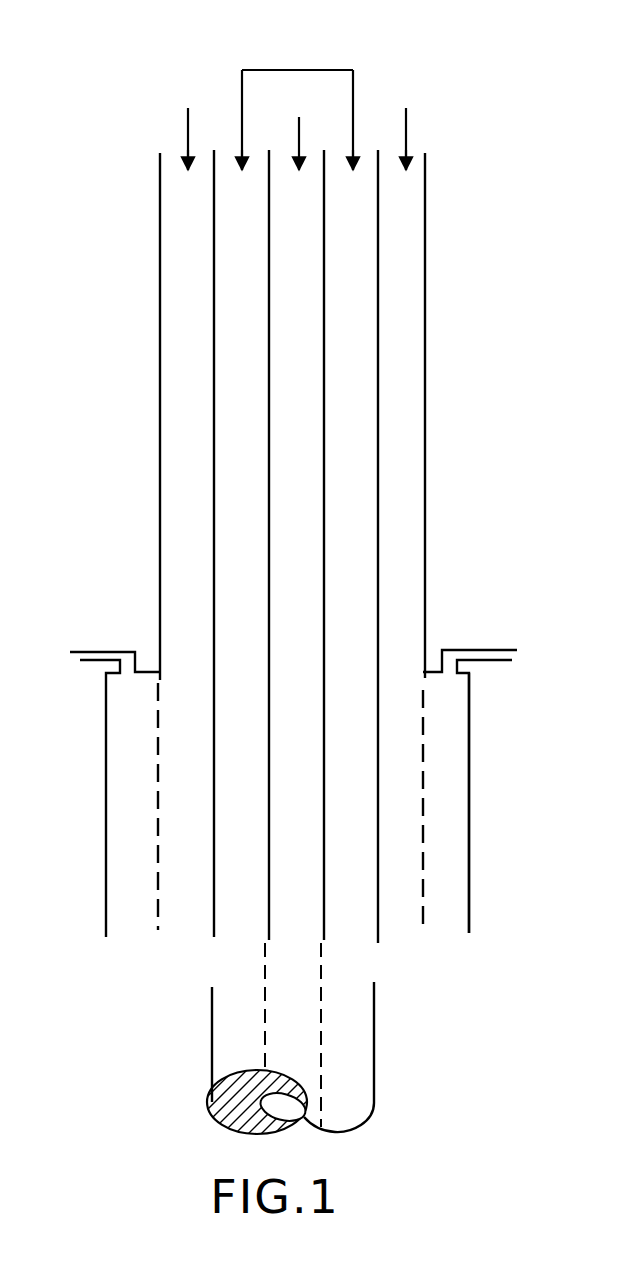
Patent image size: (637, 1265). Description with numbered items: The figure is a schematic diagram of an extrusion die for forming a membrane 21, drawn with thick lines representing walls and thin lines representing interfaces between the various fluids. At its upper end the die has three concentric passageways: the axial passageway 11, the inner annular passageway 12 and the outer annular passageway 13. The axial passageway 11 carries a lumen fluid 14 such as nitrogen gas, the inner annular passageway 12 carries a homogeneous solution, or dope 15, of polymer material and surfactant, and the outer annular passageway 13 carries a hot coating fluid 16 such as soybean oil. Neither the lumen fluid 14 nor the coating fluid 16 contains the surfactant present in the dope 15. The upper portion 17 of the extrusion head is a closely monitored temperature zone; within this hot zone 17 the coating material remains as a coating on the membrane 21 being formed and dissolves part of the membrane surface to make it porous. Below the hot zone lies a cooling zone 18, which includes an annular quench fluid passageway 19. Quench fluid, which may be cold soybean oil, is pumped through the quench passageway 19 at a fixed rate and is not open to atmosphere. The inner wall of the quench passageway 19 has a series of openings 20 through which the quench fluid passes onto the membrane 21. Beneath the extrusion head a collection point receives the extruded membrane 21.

The axial passageway 11 is at (298, 128).
The inner annular passageway 12 is at (302, 70).
The outer annular passageway 13 is at (406, 108).
The lumen fluid 14 is at (308, 460).
The dope 15 is at (357, 363).
The coating fluid 16 is at (407, 545).
The upper portion (hot zone) 17 is at (124, 350).
The cooling zone 18 is at (82, 813).
The quench fluid passageway 19 is at (455, 793).
The openings 20 is at (158, 735).
The membrane 21 is at (372, 1035).